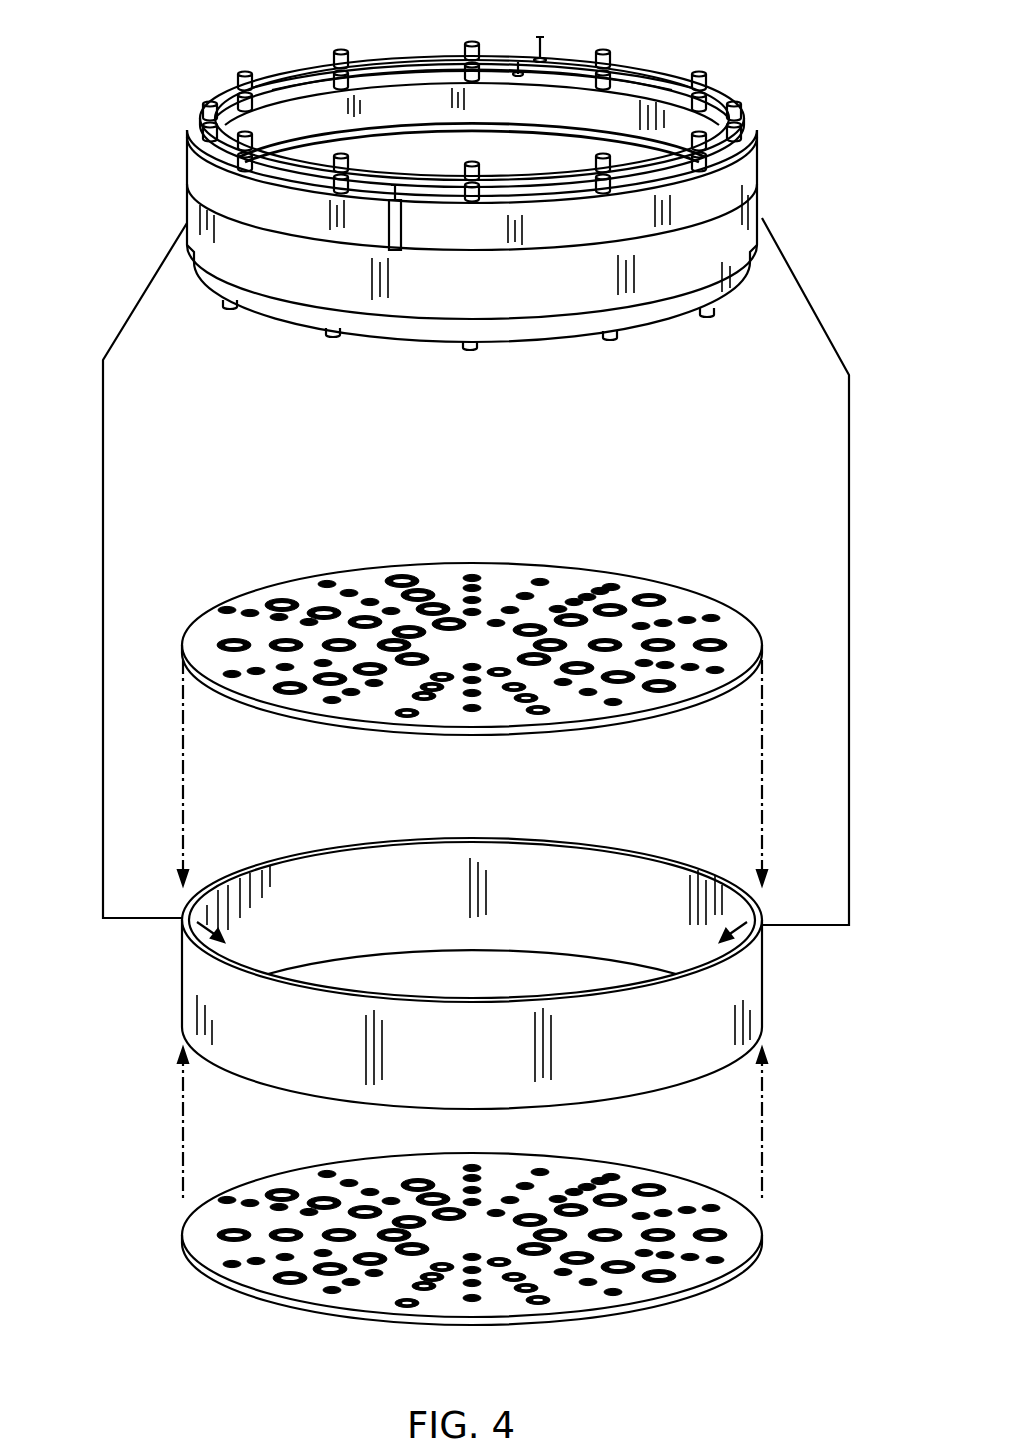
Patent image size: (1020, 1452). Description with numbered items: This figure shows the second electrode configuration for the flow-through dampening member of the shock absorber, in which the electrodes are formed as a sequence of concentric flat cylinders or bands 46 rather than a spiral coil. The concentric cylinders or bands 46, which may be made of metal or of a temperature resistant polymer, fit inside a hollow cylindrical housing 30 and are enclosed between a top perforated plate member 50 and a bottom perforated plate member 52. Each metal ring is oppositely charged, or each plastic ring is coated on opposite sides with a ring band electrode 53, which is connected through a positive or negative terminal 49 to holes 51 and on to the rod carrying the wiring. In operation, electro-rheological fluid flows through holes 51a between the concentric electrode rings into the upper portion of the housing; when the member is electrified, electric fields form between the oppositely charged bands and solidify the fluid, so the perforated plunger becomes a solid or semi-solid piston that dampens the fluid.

The hollow cylindrical housing 30 is at (762, 992).
The concentric flat cylinders or bands 46 is at (648, 82).
The positive or negative terminal 49 is at (528, 40).
The top perforated plate member 50 is at (650, 585).
The holes 51 is at (540, 580).
The holes 51a is at (410, 578).
The bottom perforated plate member 52 is at (652, 1297).
The ring band electrode 53 is at (225, 98).